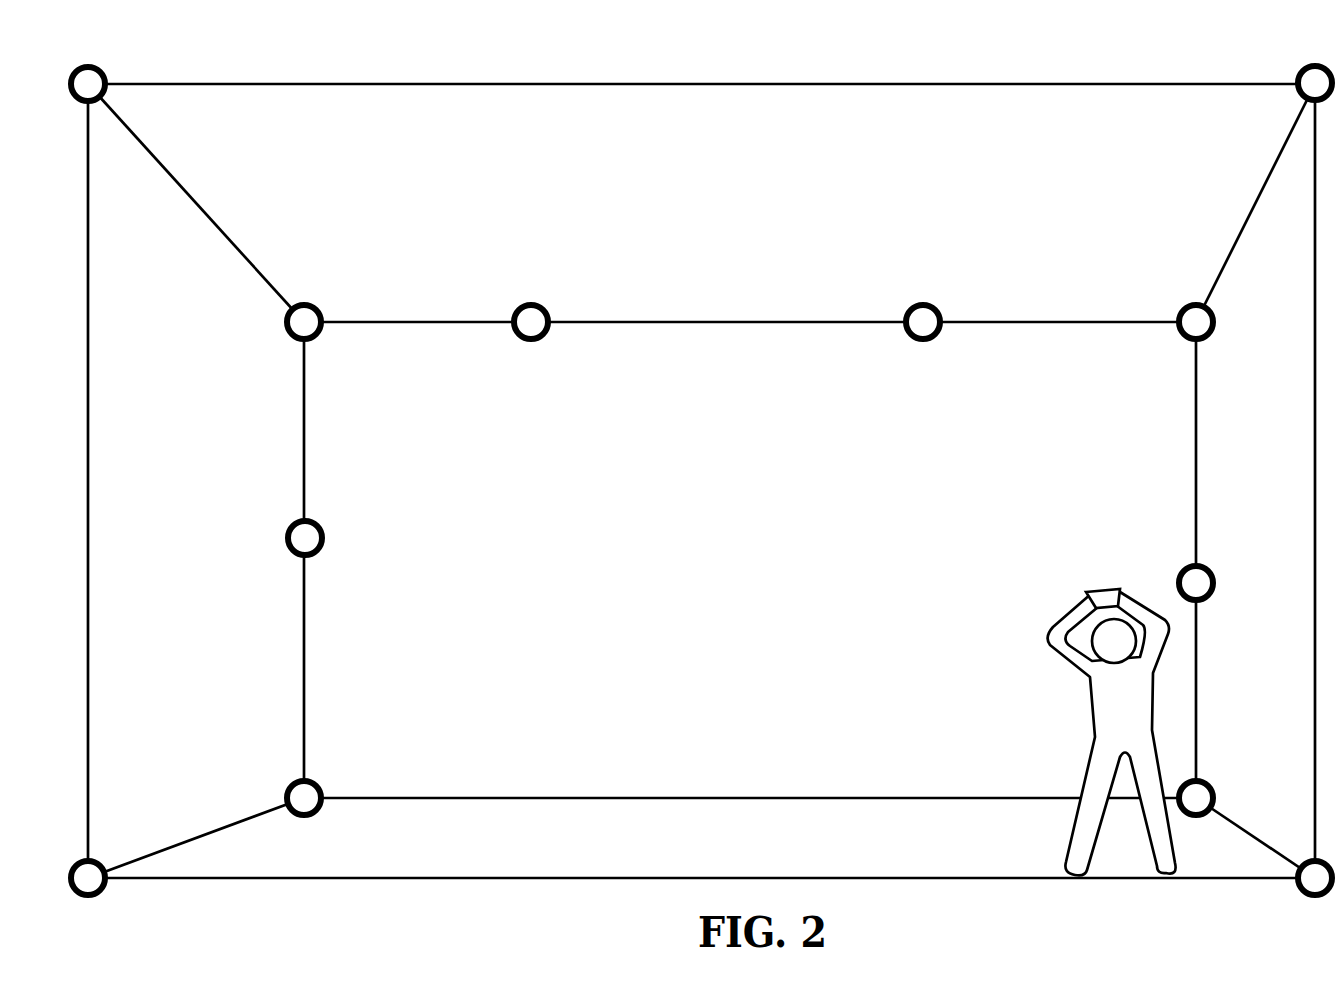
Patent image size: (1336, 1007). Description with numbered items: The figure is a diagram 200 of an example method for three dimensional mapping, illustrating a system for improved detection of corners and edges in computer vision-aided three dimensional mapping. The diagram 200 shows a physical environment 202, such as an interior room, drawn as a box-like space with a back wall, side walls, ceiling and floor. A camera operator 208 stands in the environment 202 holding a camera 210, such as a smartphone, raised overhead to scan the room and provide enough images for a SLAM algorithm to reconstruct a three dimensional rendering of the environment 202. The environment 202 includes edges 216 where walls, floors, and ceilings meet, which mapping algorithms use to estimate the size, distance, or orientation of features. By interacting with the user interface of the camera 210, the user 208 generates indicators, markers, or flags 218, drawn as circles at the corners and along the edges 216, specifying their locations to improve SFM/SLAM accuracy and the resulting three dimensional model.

The diagram 200 is at (228, 50).
The physical environment 202 is at (419, 867).
The camera operator 208 is at (1065, 705).
The camera 210 is at (1092, 568).
The edges 216 is at (285, 410).
The indicators 218 is at (522, 285).